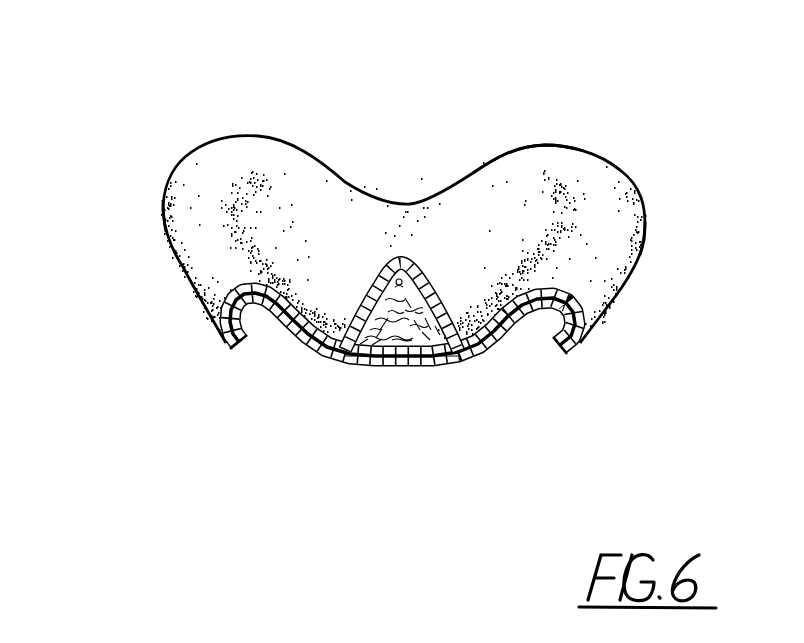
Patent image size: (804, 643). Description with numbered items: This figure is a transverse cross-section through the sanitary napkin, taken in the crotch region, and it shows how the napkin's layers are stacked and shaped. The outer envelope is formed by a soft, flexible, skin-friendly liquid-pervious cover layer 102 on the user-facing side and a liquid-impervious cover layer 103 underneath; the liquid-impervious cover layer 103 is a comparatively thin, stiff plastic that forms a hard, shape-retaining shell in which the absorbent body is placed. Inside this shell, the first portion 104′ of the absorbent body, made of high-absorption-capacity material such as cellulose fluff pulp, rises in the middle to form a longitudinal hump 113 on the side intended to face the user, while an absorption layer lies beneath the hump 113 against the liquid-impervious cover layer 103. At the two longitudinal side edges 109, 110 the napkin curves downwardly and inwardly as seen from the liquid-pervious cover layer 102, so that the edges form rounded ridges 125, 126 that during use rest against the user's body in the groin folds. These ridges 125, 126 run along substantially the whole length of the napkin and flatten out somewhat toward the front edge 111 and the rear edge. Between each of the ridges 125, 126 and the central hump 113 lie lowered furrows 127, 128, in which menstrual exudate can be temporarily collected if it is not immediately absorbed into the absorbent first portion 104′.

The front edge 111 is at (226, 135).
The liquid-pervious cover layer 102 is at (546, 158).
The first portion of the absorbent body 104′ is at (372, 300).
The longitudinal hump 113 is at (417, 265).
The longitudinal side edge 109 is at (163, 214).
The longitudinal side edge 110 is at (643, 243).
The rounded ridge 125 is at (220, 257).
The rounded ridge 126 is at (597, 260).
The lowered furrow 127 is at (298, 343).
The lowered furrow 128 is at (500, 353).
The liquid-impervious cover layer 103 is at (357, 368).